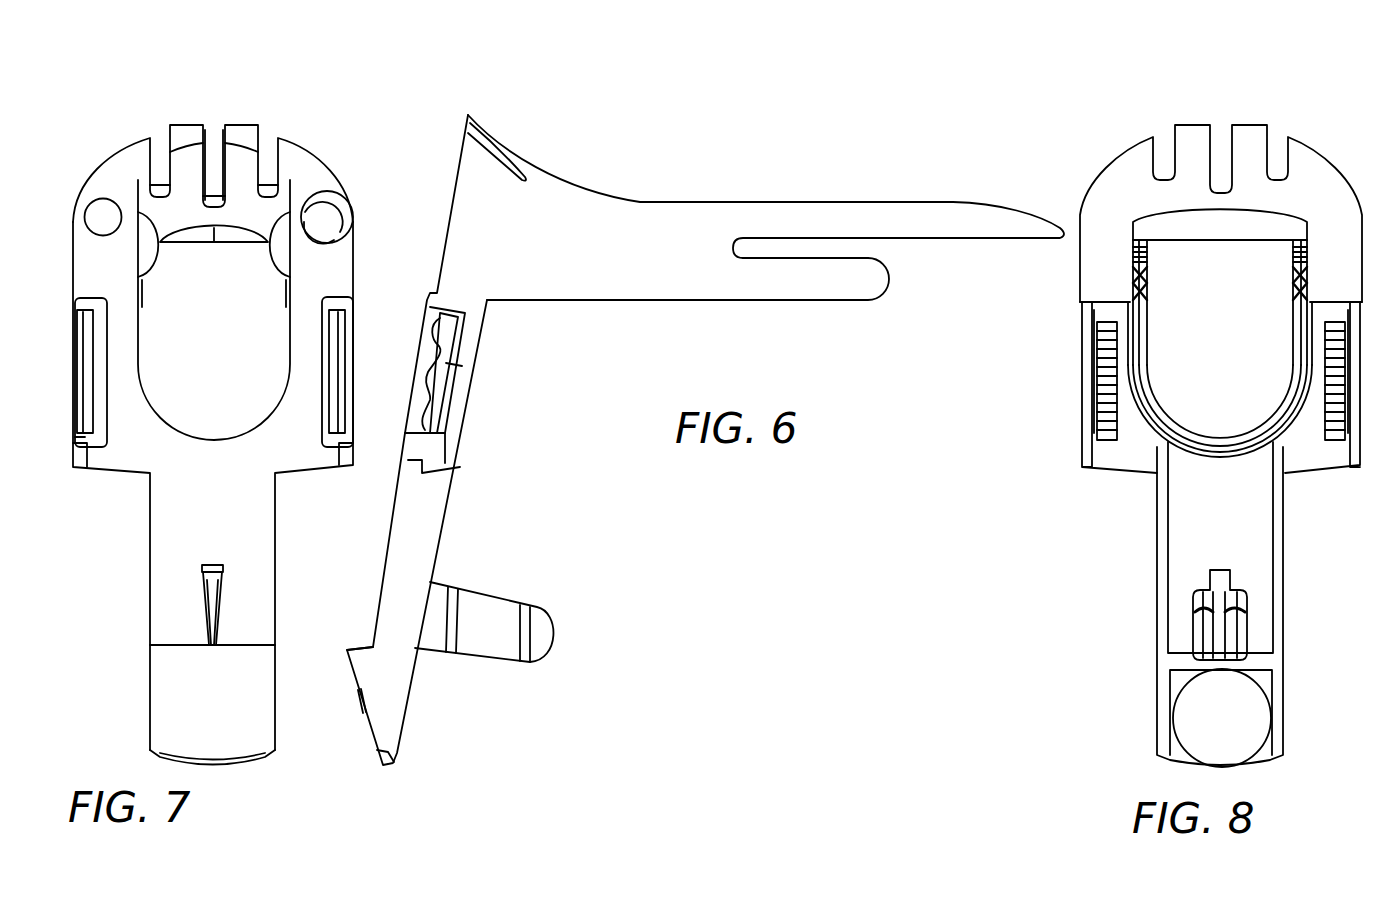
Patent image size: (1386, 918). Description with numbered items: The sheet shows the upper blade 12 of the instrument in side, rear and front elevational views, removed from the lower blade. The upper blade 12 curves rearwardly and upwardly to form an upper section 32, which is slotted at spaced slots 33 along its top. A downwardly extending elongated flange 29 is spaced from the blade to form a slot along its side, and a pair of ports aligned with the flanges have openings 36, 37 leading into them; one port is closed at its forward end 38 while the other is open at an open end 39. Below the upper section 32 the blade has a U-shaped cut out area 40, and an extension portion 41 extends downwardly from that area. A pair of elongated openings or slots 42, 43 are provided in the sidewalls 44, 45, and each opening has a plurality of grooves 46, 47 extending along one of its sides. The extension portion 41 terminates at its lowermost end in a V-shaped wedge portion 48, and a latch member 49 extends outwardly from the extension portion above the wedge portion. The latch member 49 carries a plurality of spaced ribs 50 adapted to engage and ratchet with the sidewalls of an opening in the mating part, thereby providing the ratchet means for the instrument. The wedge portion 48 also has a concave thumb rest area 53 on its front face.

In FIG. 6, the upper blade 12 is at (912, 200).
In FIG. 6, the elongated flange 29 is at (832, 283).
In FIG. 7, the upper section 32 is at (296, 150).
In FIG. 6, the upper section 32 is at (491, 146).
In FIG. 7, the spaced slots 33 is at (215, 128).
In FIG. 7, the opening 36 is at (103, 215).
In FIG. 7, the opening 37 is at (340, 208).
In FIG. 8, the forward end 38 is at (1158, 244).
In FIG. 8, the open end 39 is at (1280, 244).
In FIG. 7, the U-shaped cut out area 40 is at (285, 392).
In FIG. 8, the U-shaped cut out area 40 is at (1200, 410).
In FIG. 7, the extension portion 41 is at (232, 484).
In FIG. 7, the elongated opening 42 is at (83, 437).
In FIG. 7, the elongated opening 43 is at (343, 401).
In FIG. 6, the elongated opening 43 is at (462, 353).
In FIG. 8, the sidewall 44 is at (1357, 401).
In FIG. 6, the sidewall 45 is at (473, 384).
In FIG. 8, the sidewall 45 is at (1080, 411).
In FIG. 8, the grooves 46 is at (1333, 335).
In FIG. 6, the grooves 47 is at (442, 336).
In FIG. 8, the grooves 47 is at (1095, 348).
In FIG. 6, the V-shaped wedge portion 48 is at (376, 706).
In FIG. 6, the latch member 49 is at (488, 612).
In FIG. 8, the latch member 49 is at (1248, 619).
In FIG. 6, the spaced ribs 50 is at (460, 603).
In FIG. 8, the spaced ribs 50 is at (1193, 631).
In FIG. 8, the concave thumb rest area 53 is at (1217, 716).